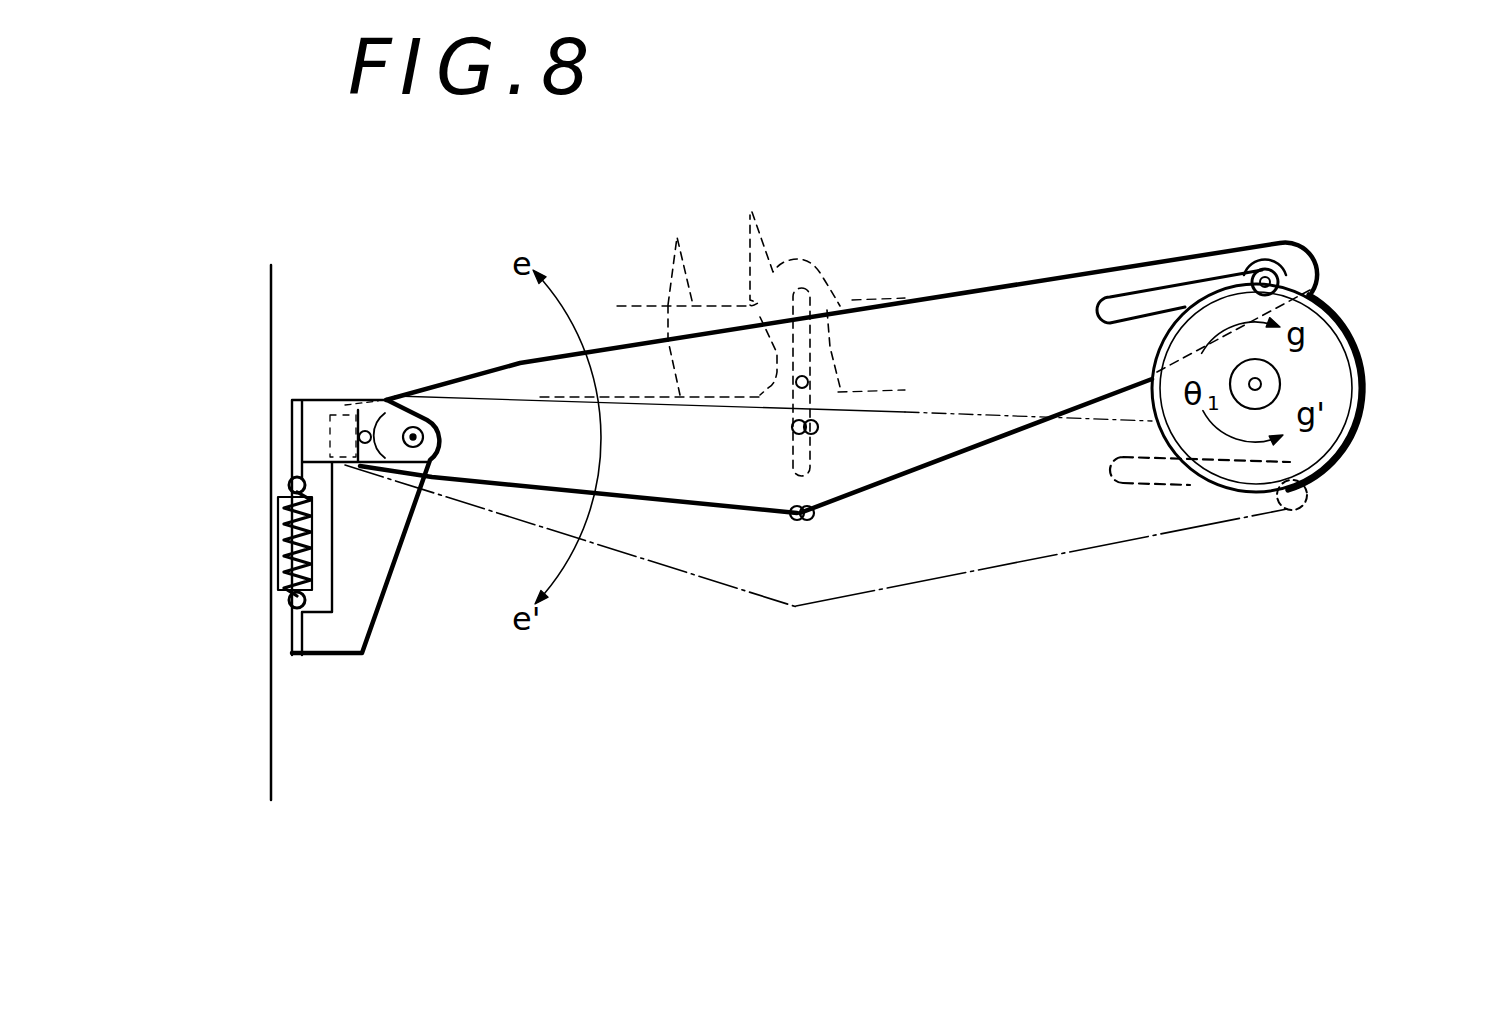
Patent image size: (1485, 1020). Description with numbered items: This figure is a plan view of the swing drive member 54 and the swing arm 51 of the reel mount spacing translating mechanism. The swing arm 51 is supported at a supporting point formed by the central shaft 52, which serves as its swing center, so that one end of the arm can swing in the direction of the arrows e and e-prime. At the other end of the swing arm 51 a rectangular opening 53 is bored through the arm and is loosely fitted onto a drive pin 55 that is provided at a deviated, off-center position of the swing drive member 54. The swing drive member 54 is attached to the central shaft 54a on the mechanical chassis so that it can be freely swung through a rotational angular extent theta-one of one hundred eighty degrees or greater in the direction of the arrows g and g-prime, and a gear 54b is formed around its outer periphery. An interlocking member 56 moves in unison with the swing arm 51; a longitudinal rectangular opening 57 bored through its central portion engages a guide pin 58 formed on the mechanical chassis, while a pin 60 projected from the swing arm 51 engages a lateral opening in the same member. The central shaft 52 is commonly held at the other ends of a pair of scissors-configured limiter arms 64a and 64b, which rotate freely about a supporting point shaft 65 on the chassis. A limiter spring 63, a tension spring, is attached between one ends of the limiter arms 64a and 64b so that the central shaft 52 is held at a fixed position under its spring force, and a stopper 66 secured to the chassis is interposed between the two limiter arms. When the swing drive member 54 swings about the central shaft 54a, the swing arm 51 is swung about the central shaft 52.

The swing arm 51 is at (640, 565).
The central shaft 52 is at (365, 432).
The rectangular opening 53 is at (1140, 297).
The swing drive member 54 is at (1323, 333).
The central shaft 54a is at (1262, 383).
The gear 54b is at (1362, 420).
The drive pin 55 is at (1270, 267).
The interlocking member 56 is at (678, 297).
The longitudinal rectangular opening 57 is at (787, 286).
The guide pin 58 is at (808, 380).
The pin 60 is at (800, 520).
The limiter spring 63 is at (280, 537).
The limiter arm 64a is at (295, 435).
The limiter arm 64b is at (372, 562).
The supporting point shaft 65 is at (413, 437).
The stopper 66 is at (278, 568).